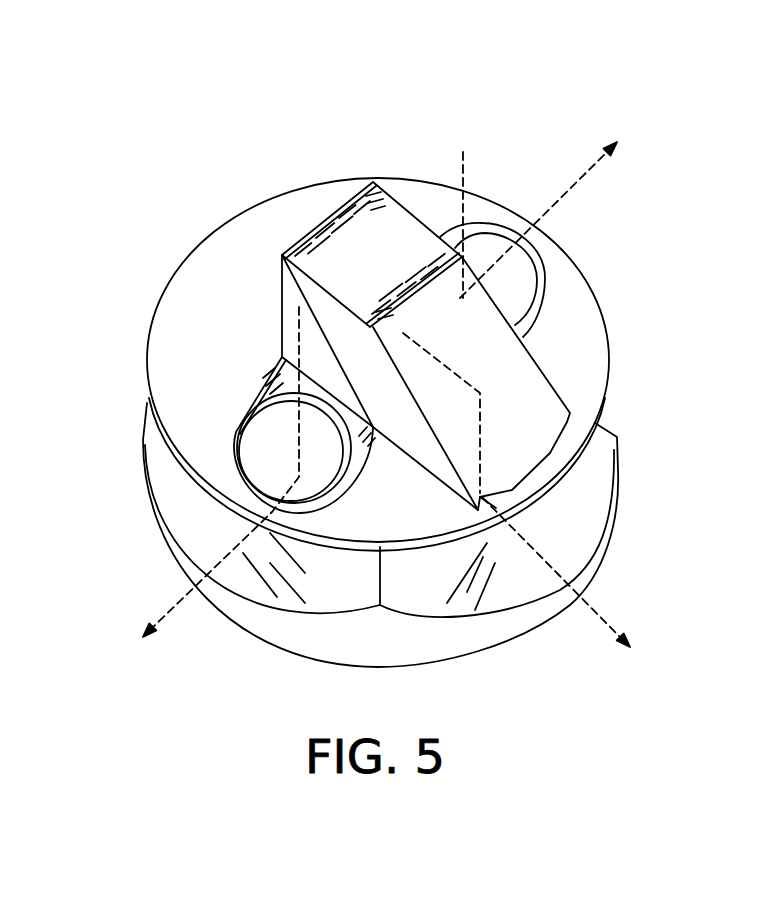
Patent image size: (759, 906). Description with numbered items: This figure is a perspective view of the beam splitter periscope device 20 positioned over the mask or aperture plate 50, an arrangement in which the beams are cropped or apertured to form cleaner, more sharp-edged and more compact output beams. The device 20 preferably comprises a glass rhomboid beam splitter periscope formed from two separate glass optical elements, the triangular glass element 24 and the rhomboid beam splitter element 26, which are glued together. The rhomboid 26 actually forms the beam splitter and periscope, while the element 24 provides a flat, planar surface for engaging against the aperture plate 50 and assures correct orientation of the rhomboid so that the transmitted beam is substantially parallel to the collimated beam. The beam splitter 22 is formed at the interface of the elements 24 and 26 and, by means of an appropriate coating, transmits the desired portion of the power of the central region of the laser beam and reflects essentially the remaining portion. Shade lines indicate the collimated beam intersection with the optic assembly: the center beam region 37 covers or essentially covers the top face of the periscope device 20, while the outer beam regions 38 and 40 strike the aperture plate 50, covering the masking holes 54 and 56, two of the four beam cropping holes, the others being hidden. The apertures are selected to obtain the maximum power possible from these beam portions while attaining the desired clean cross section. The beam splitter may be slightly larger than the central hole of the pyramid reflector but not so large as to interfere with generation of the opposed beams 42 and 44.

The beam splitter periscope device 20 is at (540, 353).
The beam splitter 22 is at (320, 312).
The triangular glass element 24 is at (278, 358).
The rhomboid beam splitter element 26 is at (428, 452).
The center beam region 37 is at (364, 210).
The outer beam region 38 is at (365, 456).
The outer beam region 40 is at (543, 280).
The opposed beam 42 is at (575, 190).
The opposed beam 44 is at (173, 605).
The mask 50 is at (410, 193).
The beam cropping hole 54 is at (515, 283).
The beam cropping hole 56 is at (258, 449).